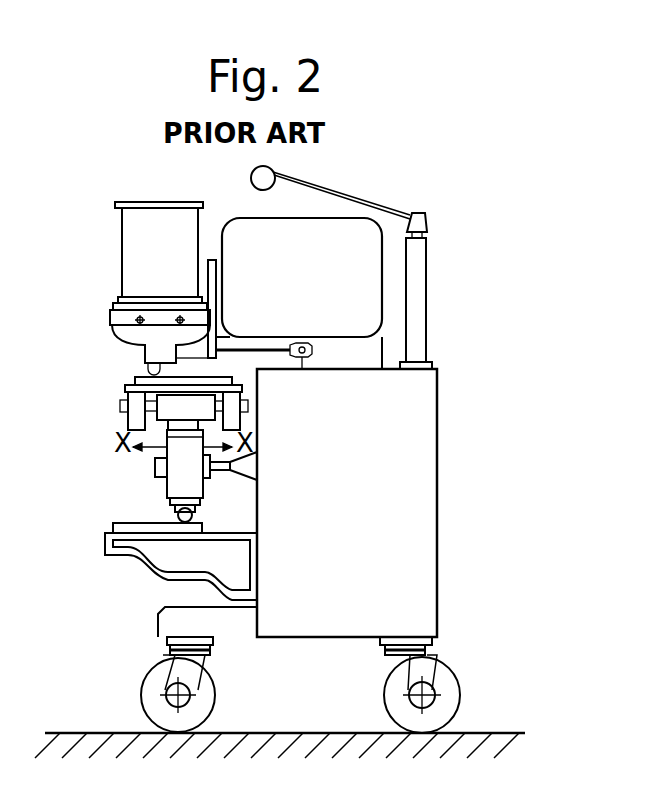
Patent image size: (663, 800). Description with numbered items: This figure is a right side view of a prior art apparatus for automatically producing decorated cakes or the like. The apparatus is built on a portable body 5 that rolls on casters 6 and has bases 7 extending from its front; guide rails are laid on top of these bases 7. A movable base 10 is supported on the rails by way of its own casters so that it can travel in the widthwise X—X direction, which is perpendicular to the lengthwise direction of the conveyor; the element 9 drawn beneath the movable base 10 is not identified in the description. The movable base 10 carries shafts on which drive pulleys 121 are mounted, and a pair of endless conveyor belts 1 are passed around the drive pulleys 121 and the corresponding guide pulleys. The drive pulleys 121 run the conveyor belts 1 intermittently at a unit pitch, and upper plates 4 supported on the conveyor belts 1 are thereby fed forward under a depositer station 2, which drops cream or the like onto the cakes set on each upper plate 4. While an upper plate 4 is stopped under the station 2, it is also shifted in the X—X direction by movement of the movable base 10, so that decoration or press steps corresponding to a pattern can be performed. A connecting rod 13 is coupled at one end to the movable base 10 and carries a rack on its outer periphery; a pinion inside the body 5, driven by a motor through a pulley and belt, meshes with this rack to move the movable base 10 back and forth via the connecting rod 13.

The depositer station 2 is at (150, 214).
The upper plate 4 is at (142, 376).
The endless conveyor belt 1 is at (135, 381).
The drive pulley 121 is at (128, 414).
The movable base 10 is at (178, 487).
The connecting rod 13 is at (222, 470).
The roller 9 is at (180, 521).
The base 7 is at (192, 540).
The portable body 5 is at (437, 506).
The caster 6 is at (150, 692).